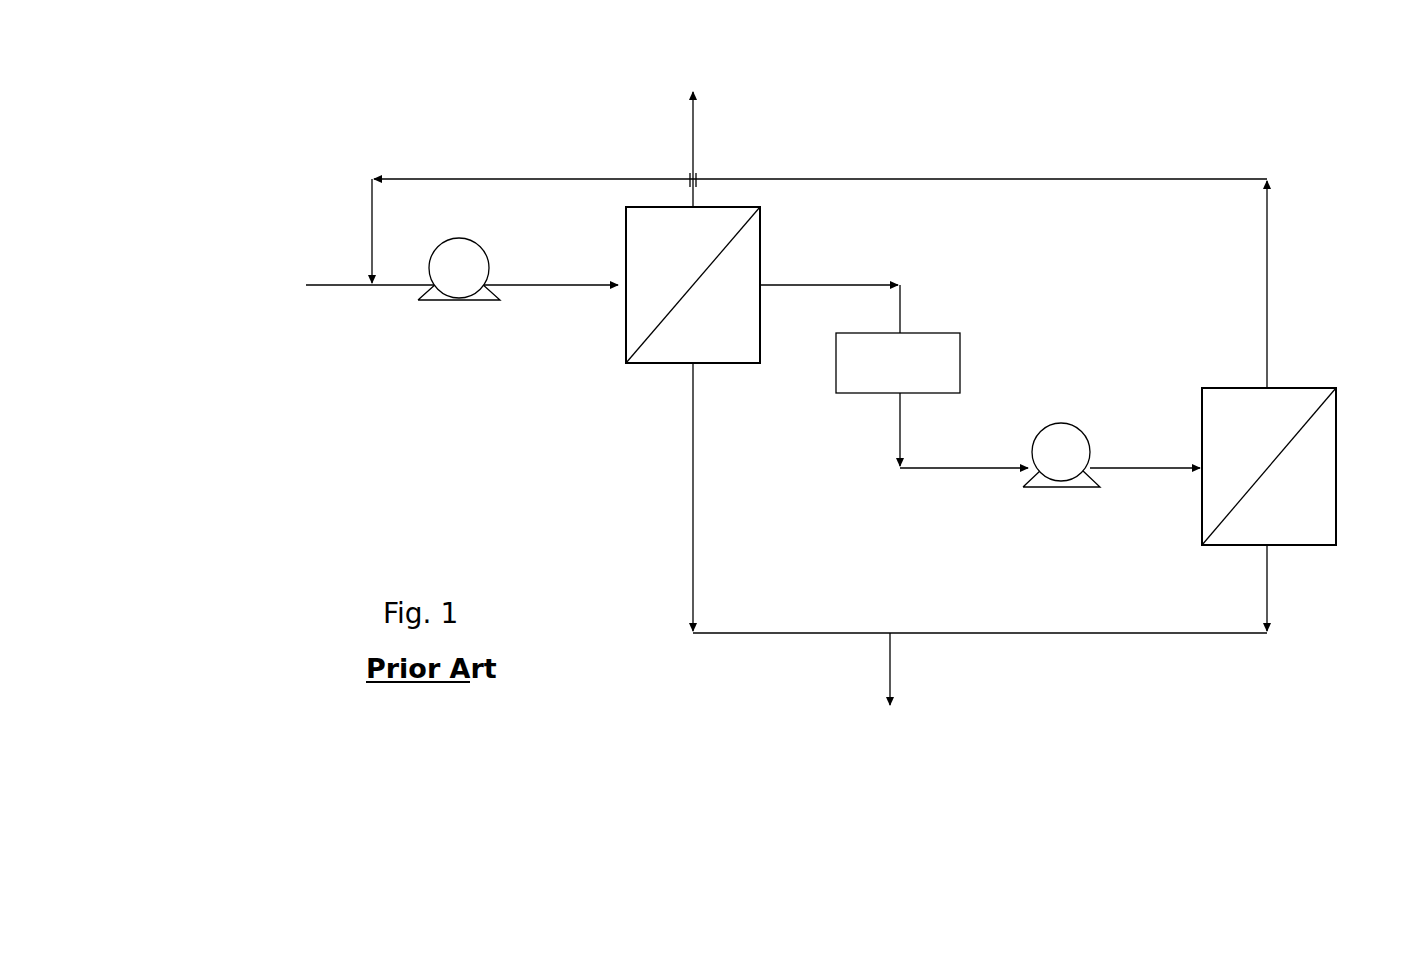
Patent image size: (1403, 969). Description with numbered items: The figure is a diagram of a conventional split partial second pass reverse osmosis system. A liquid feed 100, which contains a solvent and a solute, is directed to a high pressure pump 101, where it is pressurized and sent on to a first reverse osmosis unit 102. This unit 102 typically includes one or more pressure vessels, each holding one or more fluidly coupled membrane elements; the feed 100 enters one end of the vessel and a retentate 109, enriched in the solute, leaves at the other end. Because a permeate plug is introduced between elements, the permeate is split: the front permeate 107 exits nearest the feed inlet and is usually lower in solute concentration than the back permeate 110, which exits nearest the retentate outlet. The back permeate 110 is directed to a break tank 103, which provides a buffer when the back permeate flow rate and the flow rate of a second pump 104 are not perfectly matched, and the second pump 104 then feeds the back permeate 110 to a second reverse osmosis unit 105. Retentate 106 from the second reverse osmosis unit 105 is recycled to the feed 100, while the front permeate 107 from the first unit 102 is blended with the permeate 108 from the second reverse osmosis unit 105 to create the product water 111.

The liquid feed 100 is at (272, 250).
The high pressure pump 101 is at (441, 303).
The first reverse osmosis unit 102 is at (624, 314).
The break tank 103 is at (915, 361).
The second pump 104 is at (1028, 488).
The second reverse osmosis unit 105 is at (1314, 387).
The retentate 106 is at (1270, 254).
The front permeate 107 is at (694, 467).
The permeate 108 is at (1271, 613).
The retentate 109 is at (697, 151).
The back permeate 110 is at (866, 287).
The product water 111 is at (924, 707).